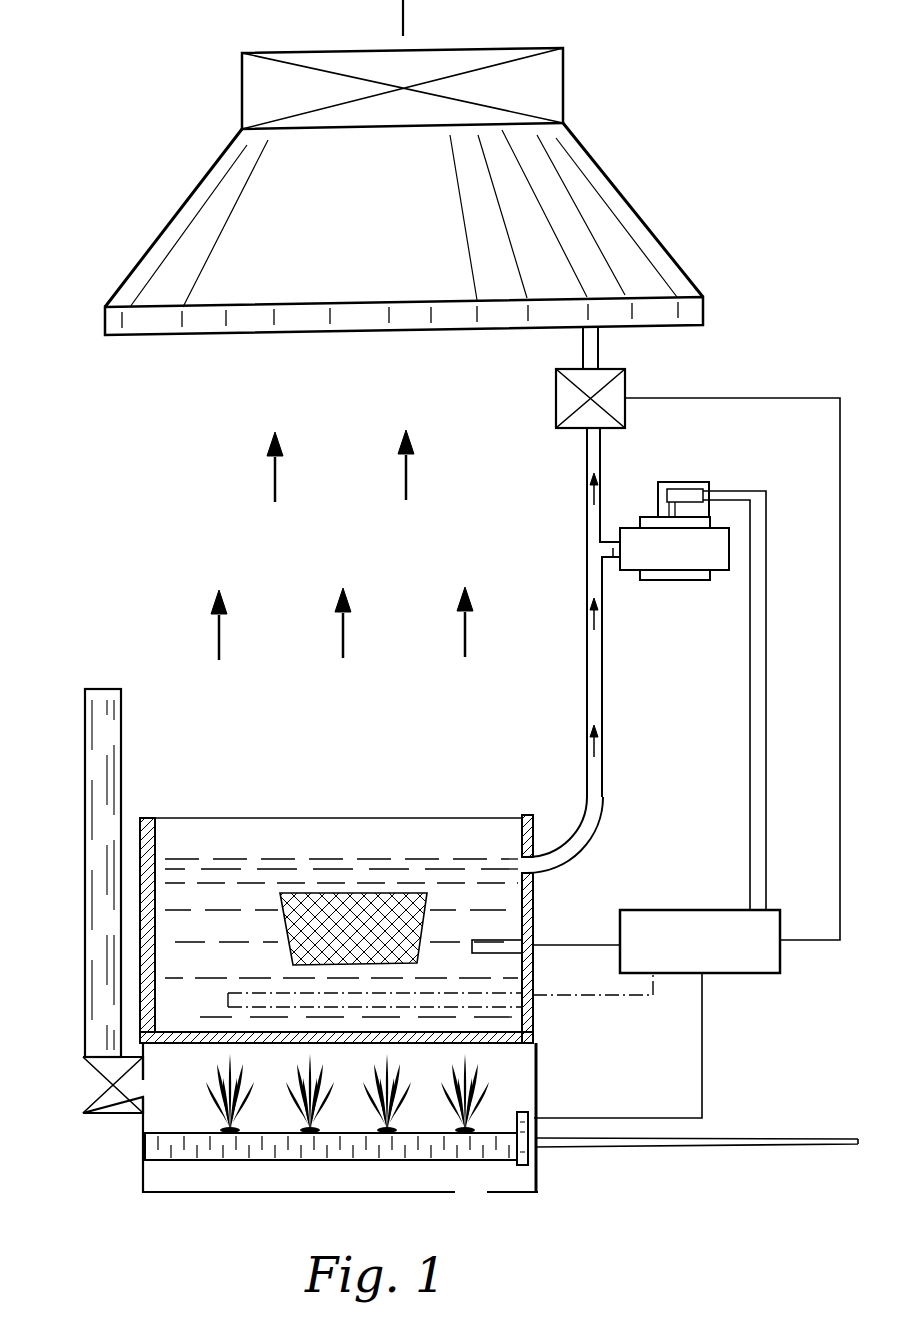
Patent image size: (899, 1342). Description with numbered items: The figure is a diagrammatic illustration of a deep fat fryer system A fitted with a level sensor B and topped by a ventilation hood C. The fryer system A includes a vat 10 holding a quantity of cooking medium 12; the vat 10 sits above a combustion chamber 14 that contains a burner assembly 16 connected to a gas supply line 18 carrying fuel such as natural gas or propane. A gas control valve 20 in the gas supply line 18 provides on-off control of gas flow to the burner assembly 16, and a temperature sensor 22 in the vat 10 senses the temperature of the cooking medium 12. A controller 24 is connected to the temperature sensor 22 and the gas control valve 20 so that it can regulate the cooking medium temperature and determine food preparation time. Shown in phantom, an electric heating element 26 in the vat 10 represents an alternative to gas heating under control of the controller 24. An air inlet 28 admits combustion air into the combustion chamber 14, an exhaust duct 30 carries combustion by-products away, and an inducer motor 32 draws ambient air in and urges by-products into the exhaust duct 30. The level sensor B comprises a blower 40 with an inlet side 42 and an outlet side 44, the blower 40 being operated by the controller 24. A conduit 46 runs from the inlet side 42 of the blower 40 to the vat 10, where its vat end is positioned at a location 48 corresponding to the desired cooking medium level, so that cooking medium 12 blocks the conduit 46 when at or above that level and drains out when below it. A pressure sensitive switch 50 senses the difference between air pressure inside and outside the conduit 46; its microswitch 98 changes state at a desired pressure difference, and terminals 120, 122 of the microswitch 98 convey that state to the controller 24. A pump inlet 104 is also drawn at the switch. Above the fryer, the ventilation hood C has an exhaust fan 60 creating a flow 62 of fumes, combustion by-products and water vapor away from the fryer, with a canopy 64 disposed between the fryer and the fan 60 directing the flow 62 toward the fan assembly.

The vat 10 is at (427, 893).
The cooking medium 12 is at (228, 880).
The combustion chamber 14 is at (332, 1182).
The burner assembly 16 is at (247, 1152).
The gas supply line 18 is at (773, 1143).
The gas control valve 20 is at (523, 1166).
The temperature sensor 22 is at (500, 947).
The controller 24 is at (708, 910).
The electric heating element 26 is at (500, 1000).
The air inlet 28 is at (472, 1192).
The exhaust duct 30 is at (84, 722).
The inducer motor 32 is at (112, 1115).
The blower 40 is at (572, 402).
The inlet side 42 is at (581, 430).
The outlet side 44 is at (582, 368).
The conduit 46 is at (604, 683).
The location 48 is at (538, 878).
The pressure sensitive switch 50 is at (667, 590).
The exhaust fan 60 is at (543, 93).
The flow 62 is at (272, 482).
The canopy 64 is at (618, 248).
The microswitch 98 is at (688, 492).
The pump inlet 104 is at (613, 552).
The terminal 120 is at (723, 487).
The terminal 122 is at (722, 500).
The deep fat fryer system A is at (71, 906).
The level sensor B is at (653, 476).
The ventilation hood C is at (686, 163).